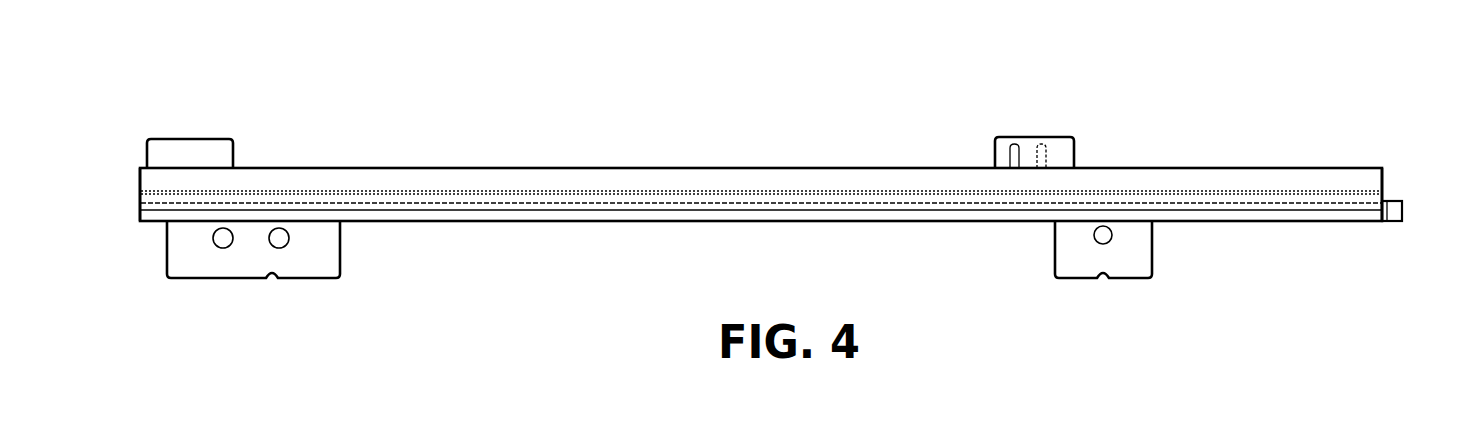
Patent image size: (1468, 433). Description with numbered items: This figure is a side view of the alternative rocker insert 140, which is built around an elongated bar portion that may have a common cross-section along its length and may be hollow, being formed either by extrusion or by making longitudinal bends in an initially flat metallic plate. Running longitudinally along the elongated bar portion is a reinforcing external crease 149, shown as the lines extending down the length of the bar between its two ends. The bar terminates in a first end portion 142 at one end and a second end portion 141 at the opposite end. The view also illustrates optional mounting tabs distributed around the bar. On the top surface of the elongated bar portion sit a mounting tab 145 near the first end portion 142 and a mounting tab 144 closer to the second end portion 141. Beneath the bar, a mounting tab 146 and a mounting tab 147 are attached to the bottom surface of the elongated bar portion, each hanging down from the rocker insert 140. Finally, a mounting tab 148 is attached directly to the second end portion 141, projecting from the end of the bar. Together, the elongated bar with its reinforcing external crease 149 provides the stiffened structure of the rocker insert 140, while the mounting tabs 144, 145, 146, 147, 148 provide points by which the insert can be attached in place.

The rocker insert 140 is at (760, 168).
The second end portion 141 is at (1383, 178).
The first end portion 142 is at (138, 200).
The mounting tab 144 is at (1060, 147).
The mounting tab 145 is at (217, 152).
The mounting tab 146 is at (317, 260).
The mounting tab 147 is at (1129, 262).
The mounting tab 148 is at (1402, 213).
The reinforcing external crease 149 is at (1343, 198).